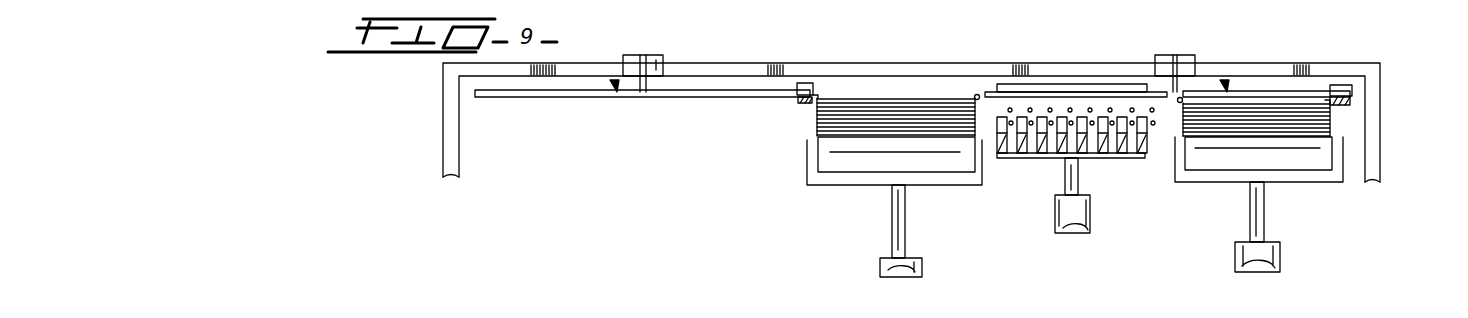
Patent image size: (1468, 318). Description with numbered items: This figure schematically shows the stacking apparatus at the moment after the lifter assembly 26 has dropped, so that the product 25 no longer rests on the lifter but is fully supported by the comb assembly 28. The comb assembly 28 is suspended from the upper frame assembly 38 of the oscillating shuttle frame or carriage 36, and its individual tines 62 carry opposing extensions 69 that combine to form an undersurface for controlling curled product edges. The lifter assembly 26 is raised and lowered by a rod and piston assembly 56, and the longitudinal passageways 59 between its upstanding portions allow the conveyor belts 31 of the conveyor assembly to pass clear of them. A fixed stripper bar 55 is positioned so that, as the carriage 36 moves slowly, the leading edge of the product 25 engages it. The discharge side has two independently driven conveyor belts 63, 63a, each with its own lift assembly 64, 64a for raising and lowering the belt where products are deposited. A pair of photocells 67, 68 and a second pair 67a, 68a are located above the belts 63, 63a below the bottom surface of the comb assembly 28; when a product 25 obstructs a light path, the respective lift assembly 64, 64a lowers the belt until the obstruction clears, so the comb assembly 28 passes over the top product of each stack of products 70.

The product 25 is at (1035, 88).
The lifter assembly 26 is at (1057, 161).
The comb assembly 28 is at (615, 84).
The belt 31 is at (1091, 107).
The shuttle frame or carriage 36 is at (462, 150).
The upper frame assembly 38 is at (556, 67).
The fixed stripper bar 55 is at (810, 86).
The rod and piston assembly 56 is at (1090, 210).
The longitudinal passageway 59 is at (1085, 152).
The tine 62 is at (700, 96).
The conveyor belt 63 is at (843, 145).
The conveyor belt 63a is at (1316, 147).
The lift assembly 64 is at (905, 224).
The lift assembly 64a is at (1265, 210).
The photocell 67 is at (978, 94).
The photocell 67a is at (1182, 97).
The photocell 68 is at (818, 97).
The photocell 68a is at (1327, 99).
The opposing extension 69 is at (548, 97).
The stack of products 70 is at (816, 118).